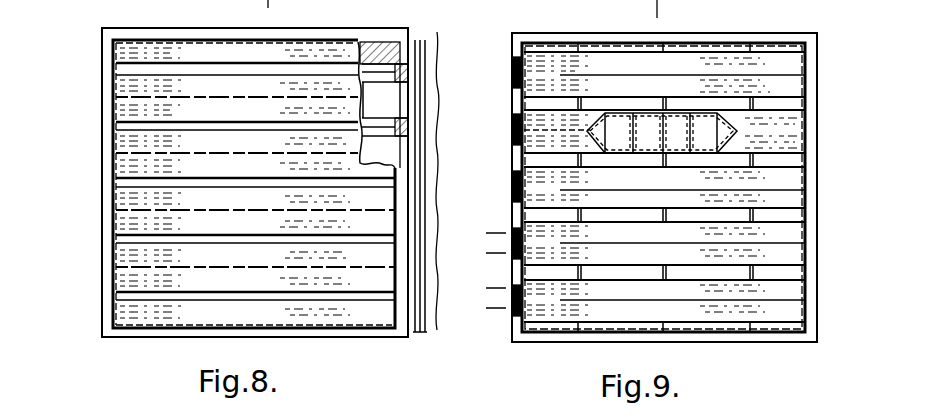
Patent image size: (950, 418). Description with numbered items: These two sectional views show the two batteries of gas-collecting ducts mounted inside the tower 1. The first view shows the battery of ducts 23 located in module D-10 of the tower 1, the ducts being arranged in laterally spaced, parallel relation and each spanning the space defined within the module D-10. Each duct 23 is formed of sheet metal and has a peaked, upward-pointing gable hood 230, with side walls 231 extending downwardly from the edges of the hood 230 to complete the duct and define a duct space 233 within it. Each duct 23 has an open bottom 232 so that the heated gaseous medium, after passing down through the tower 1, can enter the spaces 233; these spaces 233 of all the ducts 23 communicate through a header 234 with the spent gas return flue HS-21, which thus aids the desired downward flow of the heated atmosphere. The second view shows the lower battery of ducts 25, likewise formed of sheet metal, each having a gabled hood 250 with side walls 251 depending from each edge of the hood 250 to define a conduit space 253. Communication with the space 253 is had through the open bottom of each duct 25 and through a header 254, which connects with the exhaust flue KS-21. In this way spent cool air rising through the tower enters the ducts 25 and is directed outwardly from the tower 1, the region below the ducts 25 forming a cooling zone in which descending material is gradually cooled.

In FIG. 8, the tower 1 is at (92, 241).
In FIG. 9, the tower 1 is at (507, 192).
In FIG. 8, the module D-10 is at (95, 73).
In FIG. 8, the ducts 23 is at (168, 107).
In FIG. 8, the gable hood 230 is at (182, 160).
In FIG. 8, the side walls 231 is at (387, 82).
In FIG. 8, the open bottom 232 is at (382, 98).
In FIG. 8, the duct space 233 is at (398, 96).
In FIG. 8, the header 234 is at (406, 109).
In FIG. 8, the return flue HS-21 is at (428, 155).
In FIG. 9, the ducts 25 is at (782, 88).
In FIG. 9, the gabled hood 250 is at (586, 140).
In FIG. 9, the side walls 251 is at (619, 113).
In FIG. 9, the conduit space 253 is at (677, 130).
In FIG. 9, the exhaust flue KS-21 is at (492, 254).
In FIG. 9, the header 254 is at (512, 312).